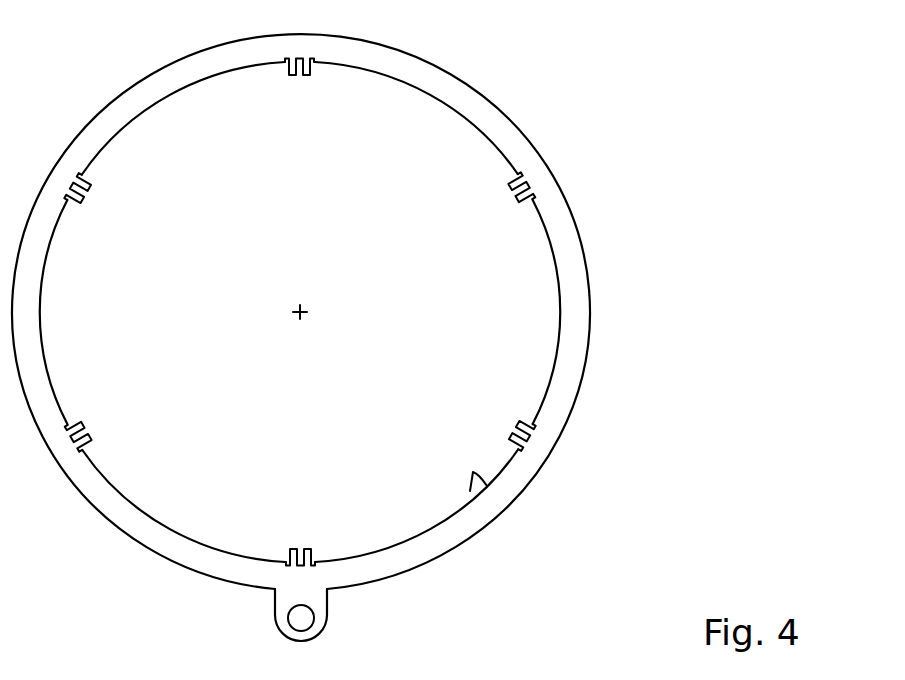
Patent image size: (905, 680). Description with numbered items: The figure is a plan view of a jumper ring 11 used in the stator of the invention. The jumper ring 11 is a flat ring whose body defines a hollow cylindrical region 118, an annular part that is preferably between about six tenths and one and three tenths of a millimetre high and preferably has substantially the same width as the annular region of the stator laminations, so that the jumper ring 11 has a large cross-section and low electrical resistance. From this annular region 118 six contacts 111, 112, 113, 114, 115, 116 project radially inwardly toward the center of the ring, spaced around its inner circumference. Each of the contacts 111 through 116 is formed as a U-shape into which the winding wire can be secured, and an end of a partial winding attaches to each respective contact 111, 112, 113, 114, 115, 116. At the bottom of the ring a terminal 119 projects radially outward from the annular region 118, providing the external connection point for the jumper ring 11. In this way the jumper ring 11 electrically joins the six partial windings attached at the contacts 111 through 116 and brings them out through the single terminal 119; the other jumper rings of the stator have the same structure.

The jumper ring 11 is at (473, 103).
The contact 111 is at (293, 543).
The contact 112 is at (515, 423).
The contact 113 is at (515, 198).
The contact 114 is at (301, 75).
The contact 115 is at (82, 203).
The contact 116 is at (83, 420).
The hollow cylindrical region 118 is at (482, 477).
The terminal 119 is at (322, 619).